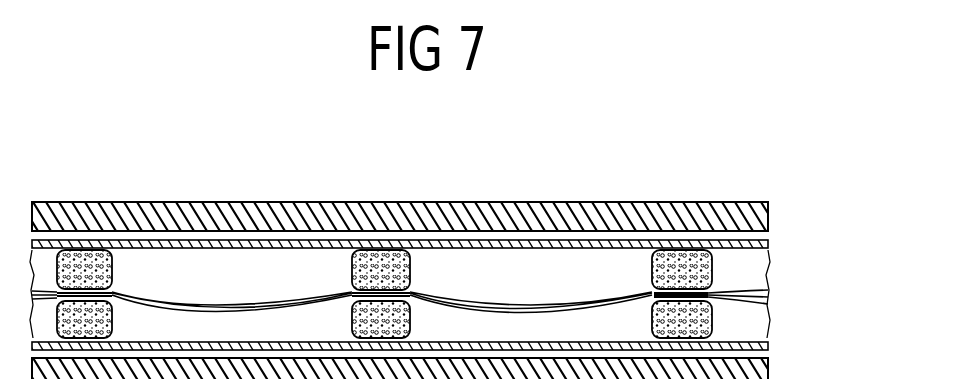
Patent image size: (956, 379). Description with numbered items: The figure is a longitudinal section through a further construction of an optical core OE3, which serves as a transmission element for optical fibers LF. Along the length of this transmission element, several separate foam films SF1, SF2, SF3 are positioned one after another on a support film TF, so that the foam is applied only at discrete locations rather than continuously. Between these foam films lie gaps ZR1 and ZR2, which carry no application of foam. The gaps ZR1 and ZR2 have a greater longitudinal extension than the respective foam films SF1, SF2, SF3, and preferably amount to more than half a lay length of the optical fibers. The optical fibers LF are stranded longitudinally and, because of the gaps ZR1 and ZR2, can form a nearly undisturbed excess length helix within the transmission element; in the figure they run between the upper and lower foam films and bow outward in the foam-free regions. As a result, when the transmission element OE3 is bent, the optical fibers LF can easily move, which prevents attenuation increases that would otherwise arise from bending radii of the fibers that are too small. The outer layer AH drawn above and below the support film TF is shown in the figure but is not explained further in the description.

The optical core OE3 is at (163, 169).
The foam film SF1 is at (85, 268).
The foam film SF2 is at (380, 268).
The foam film SF3 is at (688, 268).
The gap ZR1 is at (237, 268).
The gap ZR2 is at (565, 268).
The outer sheath AH is at (492, 205).
The support film TF is at (768, 245).
The optical fibers LF is at (745, 303).